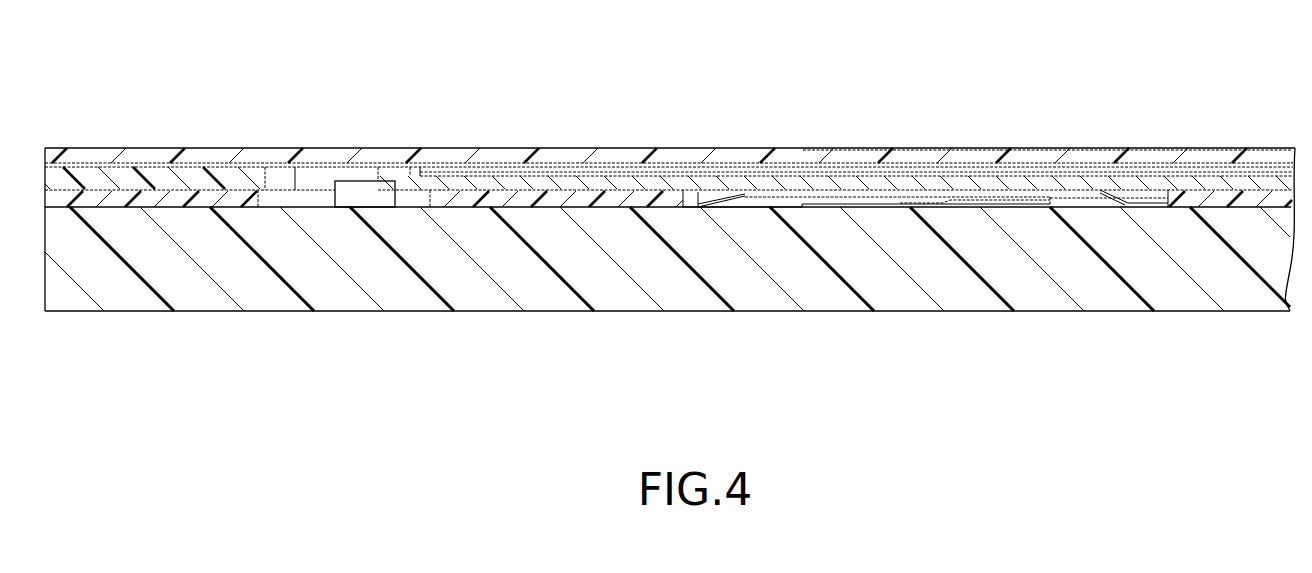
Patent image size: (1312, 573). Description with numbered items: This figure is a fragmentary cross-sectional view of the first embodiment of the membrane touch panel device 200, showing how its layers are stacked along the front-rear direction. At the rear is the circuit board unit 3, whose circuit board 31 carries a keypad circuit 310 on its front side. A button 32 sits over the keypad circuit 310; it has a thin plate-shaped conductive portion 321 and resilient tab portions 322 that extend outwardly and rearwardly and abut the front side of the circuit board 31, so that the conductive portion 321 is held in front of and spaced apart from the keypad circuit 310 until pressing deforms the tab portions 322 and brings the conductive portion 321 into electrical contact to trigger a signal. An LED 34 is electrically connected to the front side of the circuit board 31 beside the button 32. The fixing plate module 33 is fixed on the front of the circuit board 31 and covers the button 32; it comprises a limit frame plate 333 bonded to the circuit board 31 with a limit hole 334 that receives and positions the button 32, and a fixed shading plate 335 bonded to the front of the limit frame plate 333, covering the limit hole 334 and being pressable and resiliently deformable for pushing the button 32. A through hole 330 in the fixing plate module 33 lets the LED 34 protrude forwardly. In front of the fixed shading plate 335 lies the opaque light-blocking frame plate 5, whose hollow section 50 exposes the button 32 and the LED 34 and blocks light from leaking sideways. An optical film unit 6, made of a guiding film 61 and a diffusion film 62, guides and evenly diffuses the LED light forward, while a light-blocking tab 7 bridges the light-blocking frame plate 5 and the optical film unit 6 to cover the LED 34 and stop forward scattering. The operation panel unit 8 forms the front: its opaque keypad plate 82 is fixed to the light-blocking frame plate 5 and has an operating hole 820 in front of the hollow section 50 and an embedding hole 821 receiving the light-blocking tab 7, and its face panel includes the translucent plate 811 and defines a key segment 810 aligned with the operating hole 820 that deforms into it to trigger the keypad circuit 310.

The membrane touch panel device 200 is at (86, 125).
The circuit board unit 3 is at (83, 320).
The circuit board 31 is at (138, 297).
The button 32 is at (1063, 197).
The conductive portion 321 is at (937, 200).
The resilient tab portion 322 is at (746, 205).
The keypad circuit 310 is at (820, 205).
The fixing plate module 33 is at (518, 214).
The through hole 330 is at (300, 200).
The limit frame plate 333 is at (583, 200).
The limit hole 334 is at (693, 205).
The fixed shading plate 335 is at (650, 203).
The LED 34 is at (372, 195).
The light-blocking frame plate 5 is at (133, 177).
The hollow section 50 is at (283, 180).
The light-blocking tab 7 is at (322, 173).
The optical film unit 6 is at (856, 129).
The guiding film 61 is at (471, 180).
The diffusion film 62 is at (519, 180).
The operation panel unit 8 is at (672, 108).
The key segment 810 is at (984, 150).
The translucent plate 811 is at (1078, 153).
The keypad plate 82 is at (669, 113).
The operating hole 820 is at (777, 163).
The embedding hole 821 is at (204, 167).